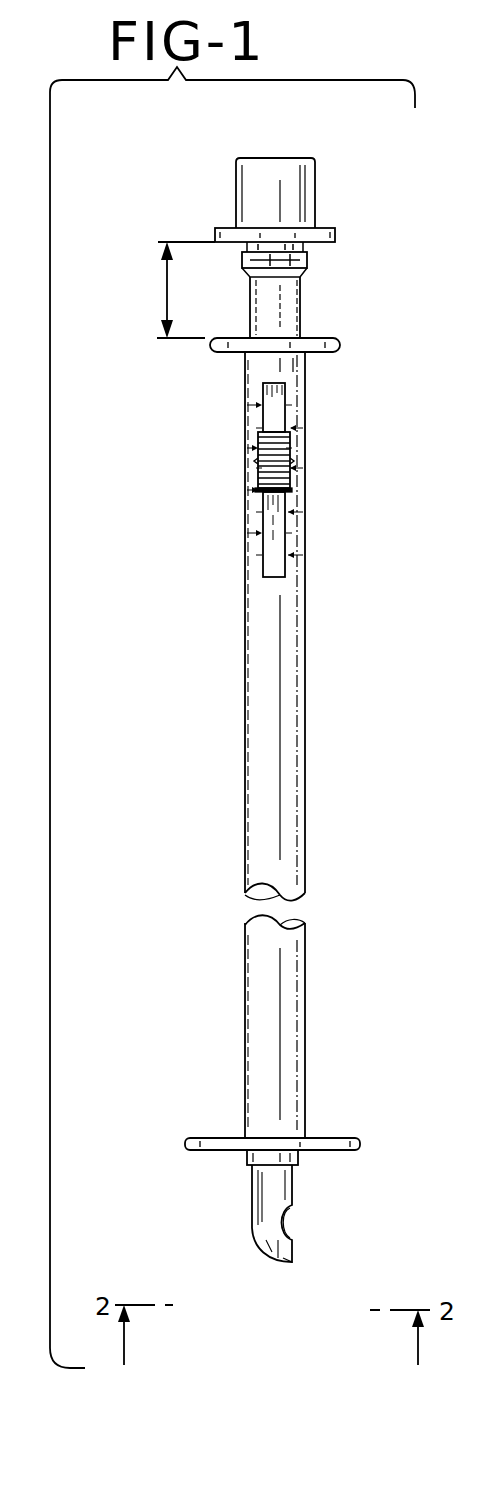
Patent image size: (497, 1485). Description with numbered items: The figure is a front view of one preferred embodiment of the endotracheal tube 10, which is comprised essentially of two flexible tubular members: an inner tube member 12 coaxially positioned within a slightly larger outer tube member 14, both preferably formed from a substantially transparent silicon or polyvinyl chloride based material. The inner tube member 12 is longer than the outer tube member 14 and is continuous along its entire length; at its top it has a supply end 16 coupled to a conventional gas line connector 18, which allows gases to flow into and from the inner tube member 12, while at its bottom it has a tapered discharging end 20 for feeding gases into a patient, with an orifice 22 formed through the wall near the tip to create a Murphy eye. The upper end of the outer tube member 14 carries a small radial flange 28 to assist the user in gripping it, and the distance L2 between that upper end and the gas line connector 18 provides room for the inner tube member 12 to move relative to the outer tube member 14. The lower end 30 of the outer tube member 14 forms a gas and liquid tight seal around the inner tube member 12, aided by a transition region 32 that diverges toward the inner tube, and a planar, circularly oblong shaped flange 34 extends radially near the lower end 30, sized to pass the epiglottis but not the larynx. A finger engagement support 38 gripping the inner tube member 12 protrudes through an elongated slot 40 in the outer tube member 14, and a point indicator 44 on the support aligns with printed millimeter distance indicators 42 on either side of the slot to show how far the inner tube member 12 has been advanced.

The endotracheal tube 10 is at (148, 197).
The inner tube member 12 is at (290, 308).
The outer tube member 14 is at (262, 677).
The supply end 16 is at (305, 258).
The gas line connector 18 is at (295, 187).
The discharging end 20 is at (283, 1255).
The orifice 22 is at (283, 1222).
The radial flange 28 is at (340, 345).
The lower end 30 is at (293, 1168).
The transition region 32 is at (250, 1160).
The shaped flange 34 is at (345, 1140).
The finger engagement support 38 is at (262, 437).
The elongated slot 40 is at (265, 392).
The distance indicators 42 is at (296, 533).
The point indicator 44 is at (258, 455).
The distance L2 is at (167, 290).